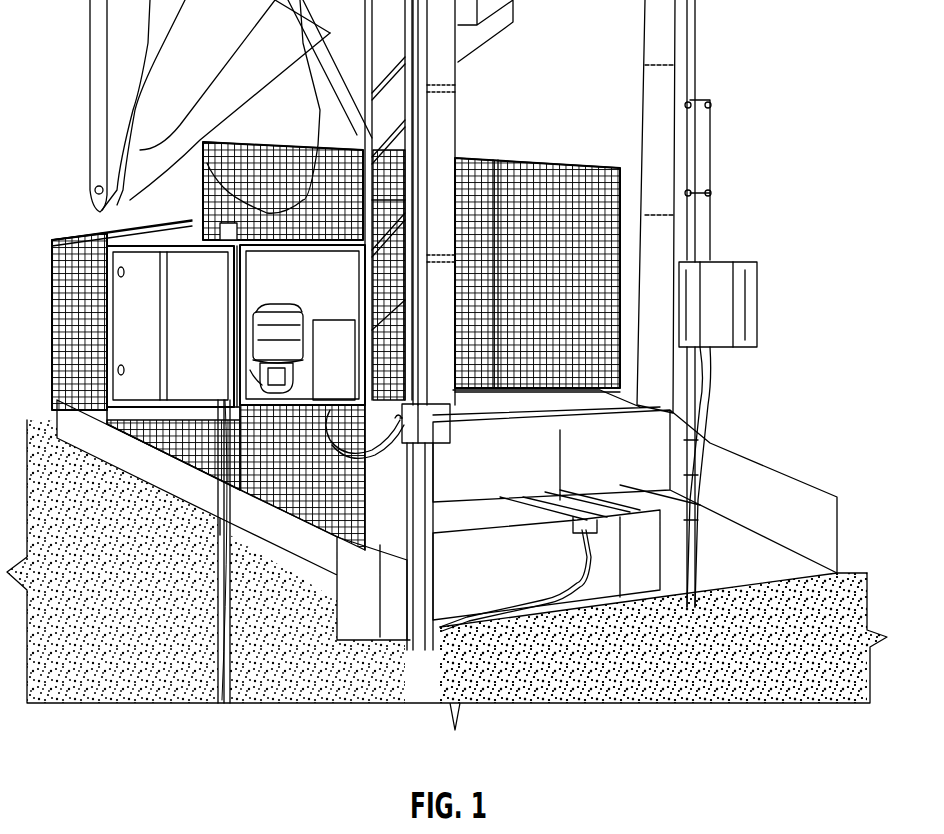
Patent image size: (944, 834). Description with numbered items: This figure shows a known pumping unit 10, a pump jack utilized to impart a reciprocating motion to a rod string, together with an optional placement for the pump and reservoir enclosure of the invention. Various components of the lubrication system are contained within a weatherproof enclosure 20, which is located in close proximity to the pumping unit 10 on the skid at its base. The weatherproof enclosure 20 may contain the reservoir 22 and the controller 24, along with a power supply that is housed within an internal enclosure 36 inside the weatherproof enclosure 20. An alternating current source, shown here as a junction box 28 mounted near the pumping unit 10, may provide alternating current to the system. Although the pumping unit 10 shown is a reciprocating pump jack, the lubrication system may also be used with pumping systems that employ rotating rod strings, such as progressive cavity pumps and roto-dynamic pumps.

The pumping unit 10 is at (704, 49).
The weatherproof enclosure 20 is at (216, 291).
The reservoir 22 is at (278, 307).
The controller 24 is at (247, 370).
The internal enclosure 36 is at (352, 376).
The junction box 28 is at (438, 430).